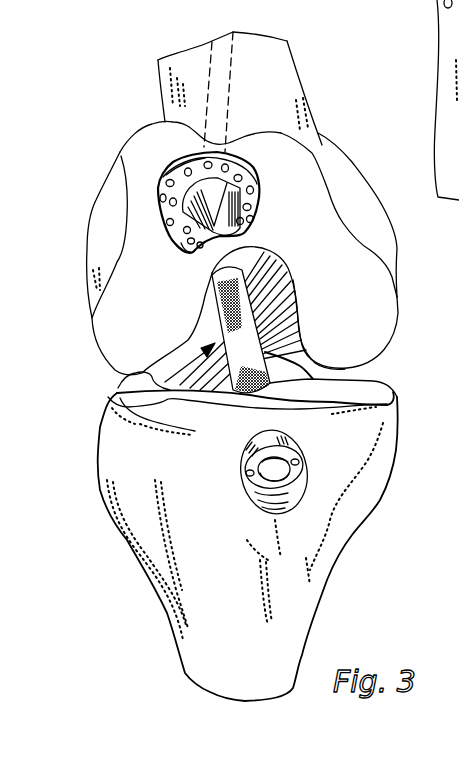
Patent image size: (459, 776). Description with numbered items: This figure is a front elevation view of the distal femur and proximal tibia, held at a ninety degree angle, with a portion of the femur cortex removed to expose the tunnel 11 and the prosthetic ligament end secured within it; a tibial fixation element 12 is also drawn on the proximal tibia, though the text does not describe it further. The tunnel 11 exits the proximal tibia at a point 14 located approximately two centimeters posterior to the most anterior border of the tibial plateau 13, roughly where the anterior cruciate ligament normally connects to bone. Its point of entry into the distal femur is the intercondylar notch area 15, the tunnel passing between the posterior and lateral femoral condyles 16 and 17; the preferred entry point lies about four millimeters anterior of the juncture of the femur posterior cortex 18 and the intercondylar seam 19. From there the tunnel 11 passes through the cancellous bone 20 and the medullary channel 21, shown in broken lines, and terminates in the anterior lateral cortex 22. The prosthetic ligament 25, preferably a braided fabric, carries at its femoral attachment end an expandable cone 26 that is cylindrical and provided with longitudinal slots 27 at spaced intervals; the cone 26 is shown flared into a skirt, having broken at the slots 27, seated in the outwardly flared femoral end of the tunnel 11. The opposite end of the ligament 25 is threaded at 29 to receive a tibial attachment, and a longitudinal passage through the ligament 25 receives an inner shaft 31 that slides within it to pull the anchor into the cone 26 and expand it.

The tunnel 11 is at (243, 228).
The tibial fixation screw and washer 12 is at (273, 483).
The tibial plateau 13 is at (172, 426).
The tunnel exit point 14 is at (215, 398).
The intercondylar notch area 15 is at (200, 327).
The posterior femoral condyle 16 is at (100, 303).
The lateral femoral condyle 17 is at (387, 328).
The femur posterior cortex 18 is at (256, 268).
The intercondylar seam 19 is at (210, 302).
The cancellous bone 20 is at (184, 250).
The medullary channel 21 is at (228, 100).
The anterior lateral cortex 22 is at (242, 202).
The prosthetic ligament 25 is at (135, 374).
The expandable cone 26 is at (245, 163).
The longitudinal slots 27 is at (193, 178).
The threaded prosthetic ligament tibial end 29 is at (275, 476).
The inner shaft 31 is at (246, 474).